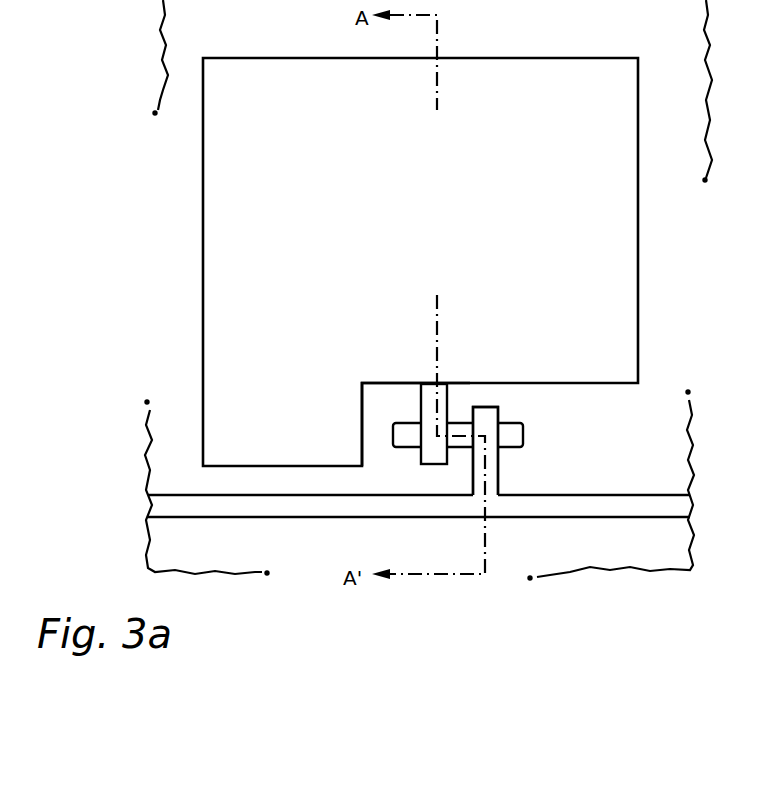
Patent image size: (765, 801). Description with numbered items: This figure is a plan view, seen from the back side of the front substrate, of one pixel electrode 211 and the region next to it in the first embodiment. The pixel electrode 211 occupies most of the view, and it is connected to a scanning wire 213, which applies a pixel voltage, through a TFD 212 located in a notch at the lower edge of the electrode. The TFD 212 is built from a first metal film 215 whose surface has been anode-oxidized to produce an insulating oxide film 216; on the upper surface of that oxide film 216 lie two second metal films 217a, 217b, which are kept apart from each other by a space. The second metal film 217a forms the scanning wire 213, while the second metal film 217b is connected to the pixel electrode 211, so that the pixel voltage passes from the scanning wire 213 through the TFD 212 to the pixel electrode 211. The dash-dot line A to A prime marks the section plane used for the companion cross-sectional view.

The pixel electrode 211 is at (622, 190).
The TFD 212 is at (444, 472).
The scanning wire 213 is at (578, 506).
The first metal film 215 is at (485, 451).
The oxide film 216 is at (510, 447).
The second metal film 217a is at (497, 416).
The second metal film 217b is at (447, 392).